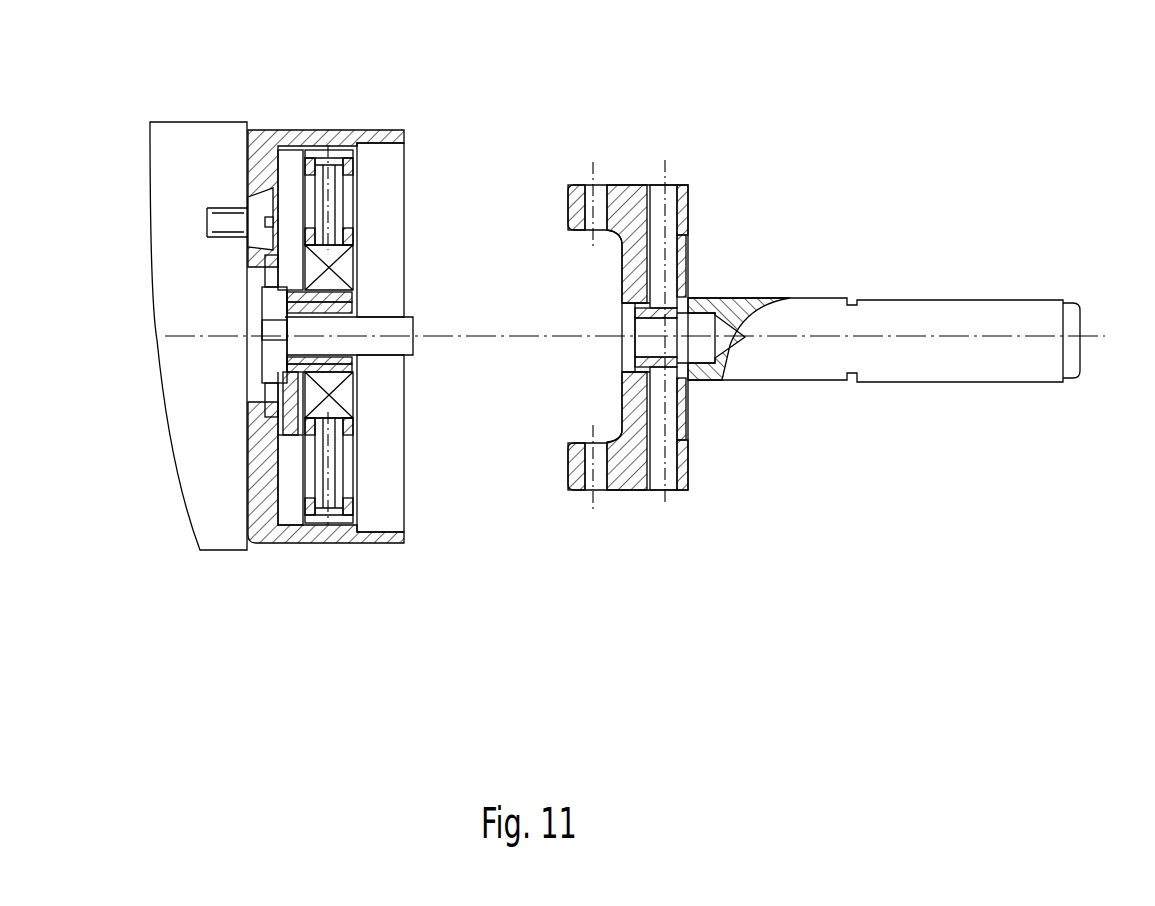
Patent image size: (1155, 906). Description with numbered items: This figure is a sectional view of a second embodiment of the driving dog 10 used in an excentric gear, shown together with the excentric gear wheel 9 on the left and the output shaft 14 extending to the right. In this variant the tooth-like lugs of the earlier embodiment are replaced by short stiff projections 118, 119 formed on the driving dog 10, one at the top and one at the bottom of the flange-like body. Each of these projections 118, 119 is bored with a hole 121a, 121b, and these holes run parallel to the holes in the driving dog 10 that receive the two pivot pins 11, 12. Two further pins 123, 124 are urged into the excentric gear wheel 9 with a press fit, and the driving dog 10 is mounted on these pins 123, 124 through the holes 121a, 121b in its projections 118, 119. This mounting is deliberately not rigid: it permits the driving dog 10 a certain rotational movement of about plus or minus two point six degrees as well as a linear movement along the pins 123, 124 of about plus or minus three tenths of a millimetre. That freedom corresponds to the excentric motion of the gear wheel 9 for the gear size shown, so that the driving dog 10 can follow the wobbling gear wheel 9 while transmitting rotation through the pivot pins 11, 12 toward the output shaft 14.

The excentric gear wheel 9 is at (303, 518).
The driving dog 10 is at (642, 327).
The pivot pin 11 is at (665, 227).
The pivot pin 12 is at (680, 465).
The output shaft 14 is at (1018, 318).
The projection 118 is at (615, 185).
The projection 119 is at (618, 492).
The hole 121a is at (590, 183).
The hole 121b is at (592, 508).
The pin 123 is at (328, 460).
The pin 124 is at (330, 207).